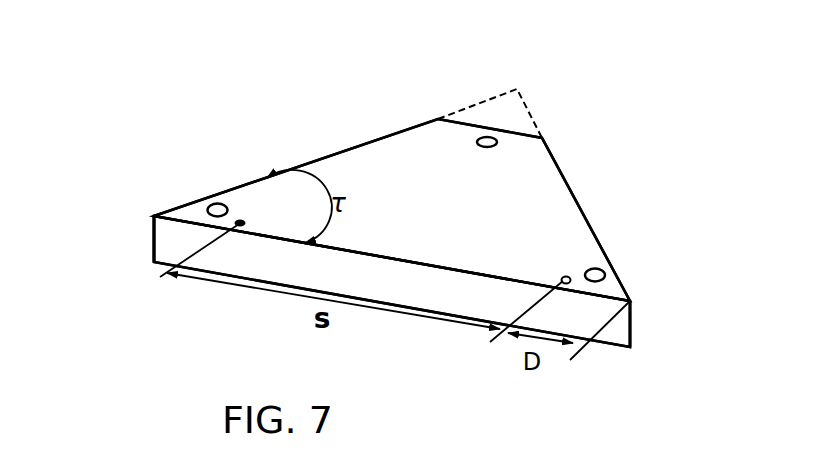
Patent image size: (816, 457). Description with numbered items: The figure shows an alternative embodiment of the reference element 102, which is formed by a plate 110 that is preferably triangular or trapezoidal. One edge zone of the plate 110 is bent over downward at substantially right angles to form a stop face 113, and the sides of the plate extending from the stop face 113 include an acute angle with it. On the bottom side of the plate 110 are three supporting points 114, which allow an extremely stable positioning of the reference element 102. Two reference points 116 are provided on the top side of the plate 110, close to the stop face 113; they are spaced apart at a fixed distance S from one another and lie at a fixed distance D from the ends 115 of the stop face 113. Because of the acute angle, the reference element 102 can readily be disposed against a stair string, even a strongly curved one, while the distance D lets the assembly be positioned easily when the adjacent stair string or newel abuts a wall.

The reference element 102 is at (332, 137).
The plate 110 is at (418, 201).
The stop face 113 is at (170, 242).
The supporting points 114 is at (208, 204).
The ends 115 is at (153, 231).
The reference points 116 is at (240, 221).